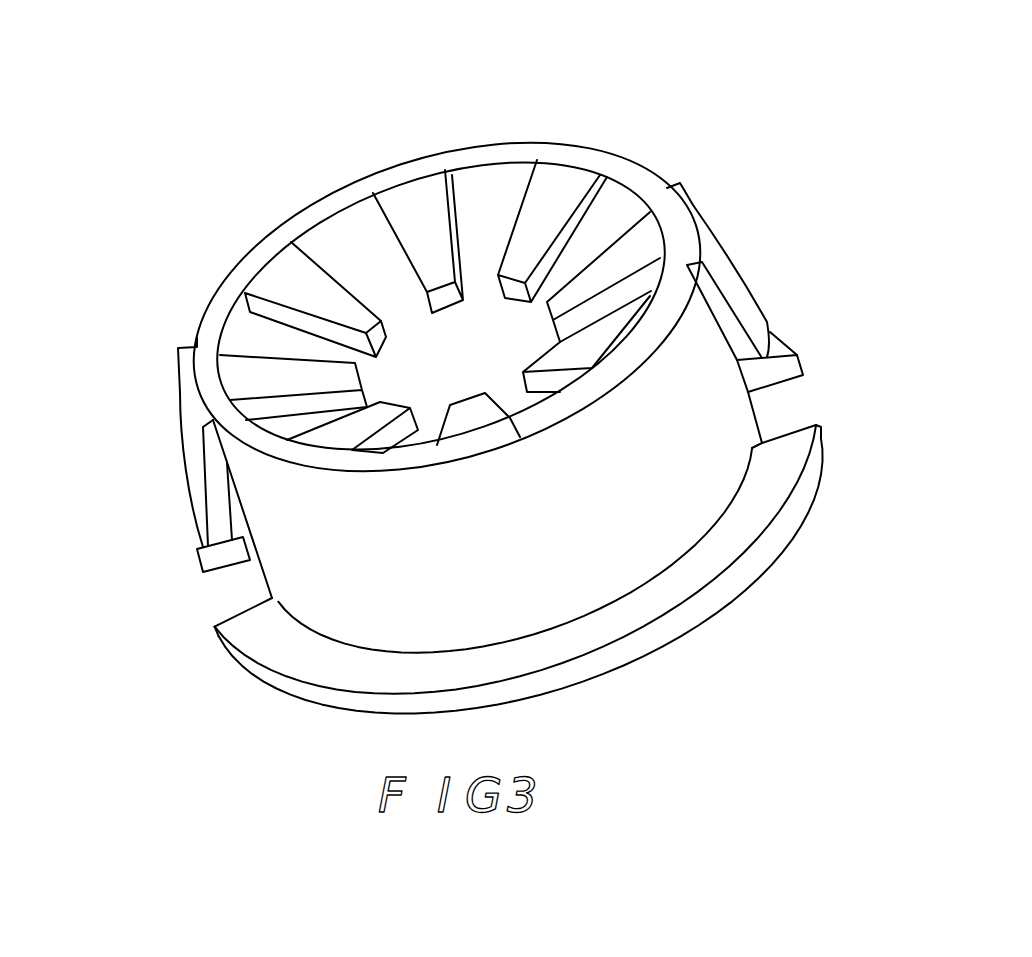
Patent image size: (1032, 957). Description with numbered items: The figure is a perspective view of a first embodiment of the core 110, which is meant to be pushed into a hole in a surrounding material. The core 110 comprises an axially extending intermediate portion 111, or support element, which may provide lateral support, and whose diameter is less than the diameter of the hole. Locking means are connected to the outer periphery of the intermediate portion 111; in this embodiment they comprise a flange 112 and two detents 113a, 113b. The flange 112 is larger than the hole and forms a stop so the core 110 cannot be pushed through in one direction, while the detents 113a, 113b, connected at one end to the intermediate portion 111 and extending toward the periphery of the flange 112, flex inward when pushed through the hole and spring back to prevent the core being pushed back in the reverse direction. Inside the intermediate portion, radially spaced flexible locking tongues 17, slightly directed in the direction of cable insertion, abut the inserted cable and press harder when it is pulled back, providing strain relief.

The core 110 is at (668, 94).
The intermediate portion 111 is at (710, 440).
The flange 112 is at (727, 550).
The detent 113a is at (193, 485).
The detent 113b is at (742, 297).
The flexible locking tongues 17 is at (418, 218).